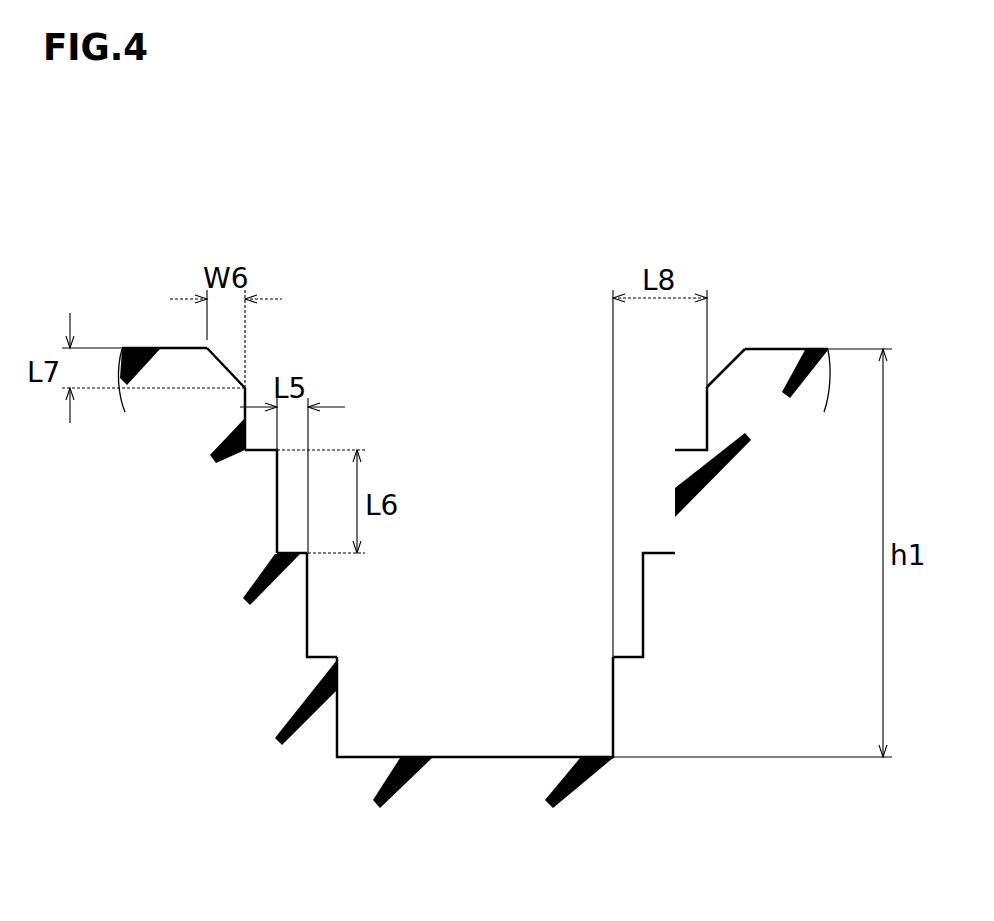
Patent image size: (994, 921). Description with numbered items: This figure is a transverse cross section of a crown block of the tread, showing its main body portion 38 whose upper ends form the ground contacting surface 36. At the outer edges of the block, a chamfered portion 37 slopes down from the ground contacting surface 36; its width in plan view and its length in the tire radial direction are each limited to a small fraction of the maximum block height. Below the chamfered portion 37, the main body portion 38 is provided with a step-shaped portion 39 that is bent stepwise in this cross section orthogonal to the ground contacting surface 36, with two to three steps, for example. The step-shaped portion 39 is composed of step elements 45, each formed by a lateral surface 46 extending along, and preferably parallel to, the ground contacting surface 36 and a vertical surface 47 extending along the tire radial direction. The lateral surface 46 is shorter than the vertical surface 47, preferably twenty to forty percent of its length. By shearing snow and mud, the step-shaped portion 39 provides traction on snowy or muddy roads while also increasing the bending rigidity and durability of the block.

The ground contacting surface 36 is at (153, 348).
The chamfered portion 37 is at (222, 361).
The main body portion 38 is at (591, 545).
The step-shaped portion 39 is at (310, 627).
The step element 45 is at (186, 527).
The lateral surface 46 is at (291, 553).
The vertical surface 47 is at (277, 470).